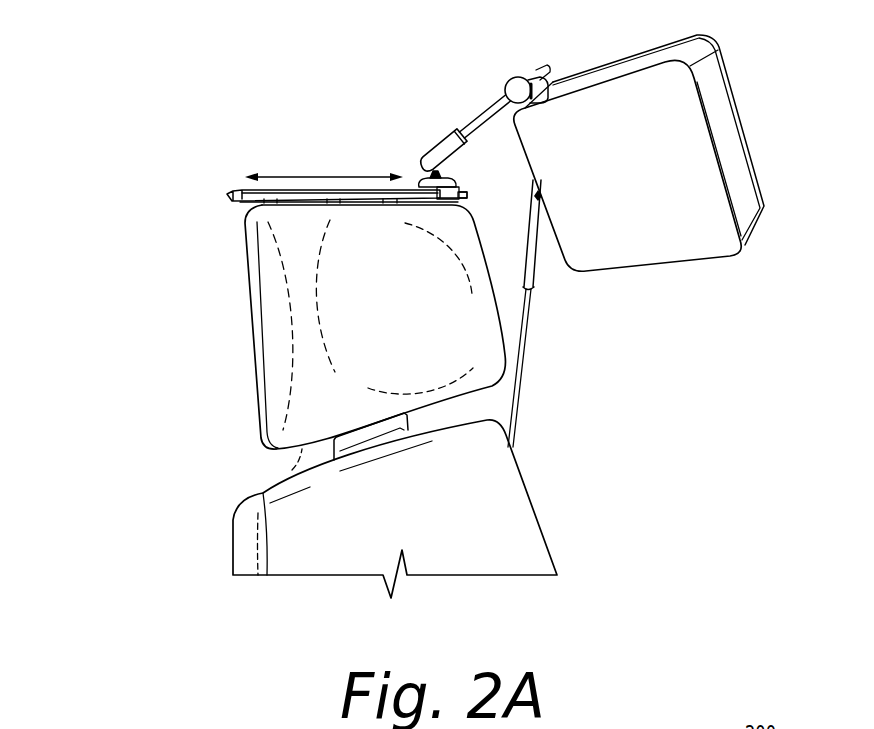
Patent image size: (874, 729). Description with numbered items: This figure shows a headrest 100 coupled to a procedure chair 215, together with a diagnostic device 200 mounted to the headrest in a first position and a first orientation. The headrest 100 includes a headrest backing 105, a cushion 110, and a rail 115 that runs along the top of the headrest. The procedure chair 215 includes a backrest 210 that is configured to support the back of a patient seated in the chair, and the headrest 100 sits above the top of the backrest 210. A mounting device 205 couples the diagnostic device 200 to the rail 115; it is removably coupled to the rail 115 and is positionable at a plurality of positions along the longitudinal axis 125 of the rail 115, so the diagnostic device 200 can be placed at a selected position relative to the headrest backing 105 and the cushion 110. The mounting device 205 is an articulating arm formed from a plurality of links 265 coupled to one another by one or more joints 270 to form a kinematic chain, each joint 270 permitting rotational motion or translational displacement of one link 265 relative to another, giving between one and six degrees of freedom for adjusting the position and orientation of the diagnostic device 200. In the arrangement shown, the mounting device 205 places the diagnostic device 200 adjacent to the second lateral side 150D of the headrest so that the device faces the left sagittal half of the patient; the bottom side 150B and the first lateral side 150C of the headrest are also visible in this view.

The headrest 100 is at (124, 111).
The headrest backing 105 is at (256, 381).
The cushion 110 is at (495, 368).
The rail 115 is at (228, 195).
The longitudinal axis 125 is at (327, 174).
The bottom edge of seat back 150B is at (292, 470).
The side edge of seat back 150C is at (254, 289).
The second lateral side 150D is at (477, 224).
The diagnostic device 200 is at (663, 54).
The mounting device 205 is at (455, 90).
The backrest 210 is at (507, 527).
The procedure chair 215 is at (577, 458).
The links 265 is at (477, 121).
The joints 270 is at (518, 76).